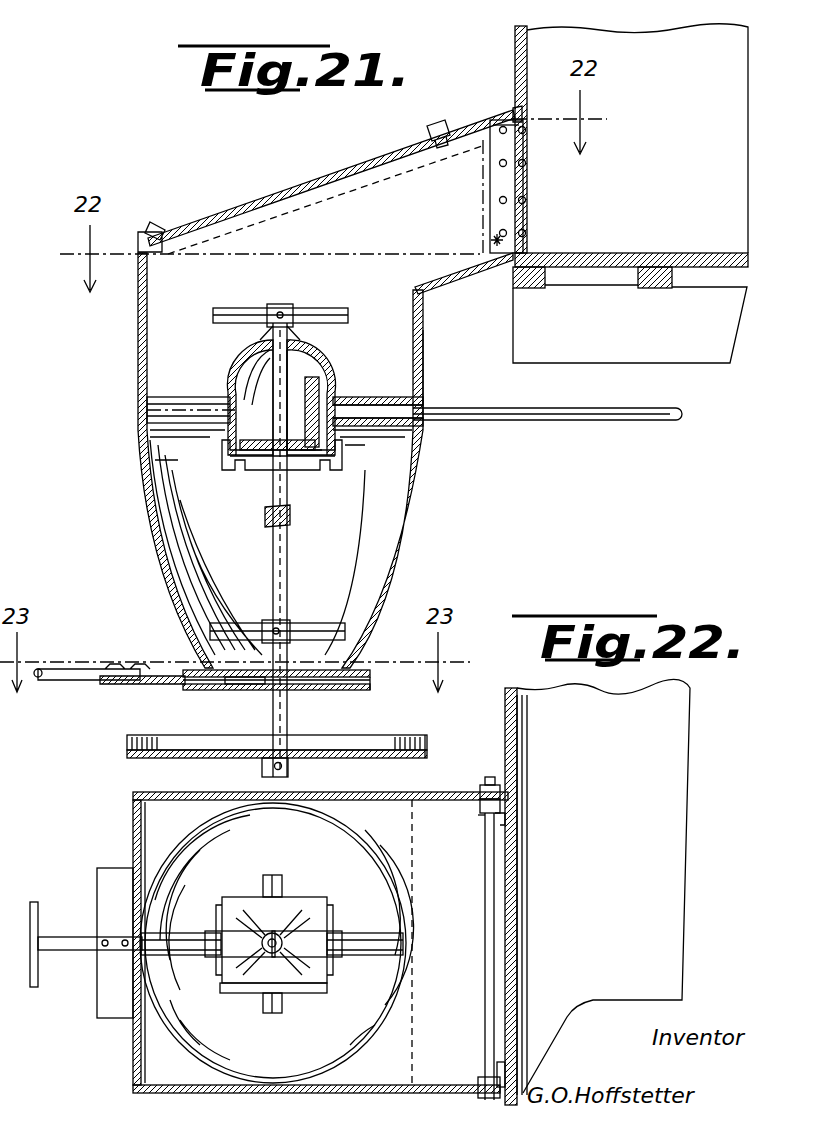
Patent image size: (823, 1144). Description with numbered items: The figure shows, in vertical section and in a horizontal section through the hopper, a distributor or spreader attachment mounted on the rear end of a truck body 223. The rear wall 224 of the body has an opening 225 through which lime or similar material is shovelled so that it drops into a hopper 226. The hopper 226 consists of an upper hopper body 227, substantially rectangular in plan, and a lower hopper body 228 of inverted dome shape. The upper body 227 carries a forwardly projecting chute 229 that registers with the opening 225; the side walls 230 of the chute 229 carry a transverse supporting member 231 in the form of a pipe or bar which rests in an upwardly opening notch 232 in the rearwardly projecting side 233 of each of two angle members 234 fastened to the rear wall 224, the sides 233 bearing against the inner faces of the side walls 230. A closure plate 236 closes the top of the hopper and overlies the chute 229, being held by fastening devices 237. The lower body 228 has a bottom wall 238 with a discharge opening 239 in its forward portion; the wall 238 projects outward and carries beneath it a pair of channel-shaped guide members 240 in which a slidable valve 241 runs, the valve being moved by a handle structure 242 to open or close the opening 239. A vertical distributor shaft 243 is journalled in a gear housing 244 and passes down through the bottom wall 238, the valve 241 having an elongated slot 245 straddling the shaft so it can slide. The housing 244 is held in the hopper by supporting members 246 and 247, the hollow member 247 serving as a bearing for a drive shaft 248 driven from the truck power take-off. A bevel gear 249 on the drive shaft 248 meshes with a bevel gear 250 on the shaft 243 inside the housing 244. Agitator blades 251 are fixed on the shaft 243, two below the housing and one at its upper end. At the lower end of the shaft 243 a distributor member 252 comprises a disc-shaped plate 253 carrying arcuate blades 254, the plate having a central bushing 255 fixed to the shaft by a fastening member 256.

In FIG. 21, the truck body 223 is at (648, 245).
In FIG. 21, the rear wall 224 is at (515, 78).
In FIG. 22, the rear wall 224 is at (518, 748).
In FIG. 21, the opening 225 is at (522, 150).
In FIG. 22, the opening 225 is at (527, 932).
In FIG. 21, the hopper 226 is at (432, 377).
In FIG. 21, the upper hopper body 227 is at (423, 338).
In FIG. 22, the upper hopper body 227 is at (380, 1094).
In FIG. 21, the lower hopper body 228 is at (408, 555).
In FIG. 21, the chute 229 is at (452, 266).
In FIG. 22, the chute 229 is at (305, 942).
In FIG. 22, the side walls 230 is at (450, 792).
In FIG. 22, the supporting member 231 is at (485, 848).
In FIG. 22, the notch 232 is at (478, 815).
In FIG. 22, the rearwardly projecting side 233 is at (478, 1085).
In FIG. 22, the angle member 234 is at (505, 815).
In FIG. 21, the closure plate 236 is at (345, 152).
In FIG. 21, the fastening devices 237 is at (147, 224).
In FIG. 21, the bottom wall 238 is at (200, 690).
In FIG. 21, the discharge opening 239 is at (322, 691).
In FIG. 21, the channel-shaped guide members 240 is at (305, 692).
In FIG. 21, the slidable valve 241 is at (140, 686).
In FIG. 21, the handle structure 242 is at (42, 670).
In FIG. 22, the handle structure 242 is at (75, 950).
In FIG. 21, the distributor shaft 243 is at (288, 562).
In FIG. 22, the distributor shaft 243 is at (284, 965).
In FIG. 21, the gear housing 244 is at (332, 385).
In FIG. 22, the gear housing 244 is at (315, 908).
In FIG. 21, the elongated slot 245 is at (243, 691).
In FIG. 21, the supporting member 246 is at (180, 398).
In FIG. 22, the supporting member 246 is at (191, 960).
In FIG. 21, the supporting member 247 is at (371, 398).
In FIG. 22, the supporting member 247 is at (340, 960).
In FIG. 21, the drive shaft 248 is at (497, 421).
In FIG. 21, the bevel gear 249 is at (316, 380).
In FIG. 21, the bevel gear 250 is at (262, 467).
In FIG. 21, the agitator blades 251 is at (292, 309).
In FIG. 22, the agitator blades 251 is at (275, 876).
In FIG. 21, the distributor member 252 is at (378, 746).
In FIG. 21, the disc-shaped plate 253 is at (383, 759).
In FIG. 21, the arcuate blades 254 is at (427, 740).
In FIG. 21, the bushing 255 is at (262, 768).
In FIG. 21, the fastening member 256 is at (292, 768).